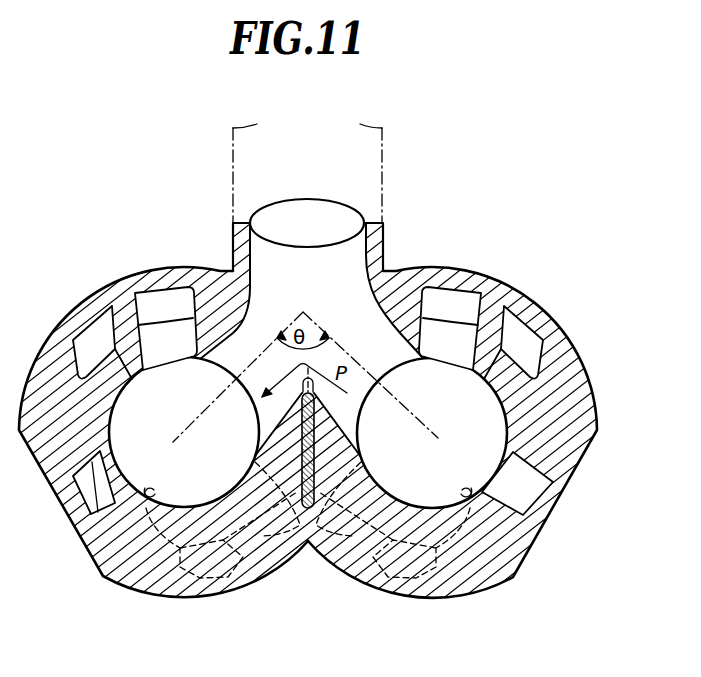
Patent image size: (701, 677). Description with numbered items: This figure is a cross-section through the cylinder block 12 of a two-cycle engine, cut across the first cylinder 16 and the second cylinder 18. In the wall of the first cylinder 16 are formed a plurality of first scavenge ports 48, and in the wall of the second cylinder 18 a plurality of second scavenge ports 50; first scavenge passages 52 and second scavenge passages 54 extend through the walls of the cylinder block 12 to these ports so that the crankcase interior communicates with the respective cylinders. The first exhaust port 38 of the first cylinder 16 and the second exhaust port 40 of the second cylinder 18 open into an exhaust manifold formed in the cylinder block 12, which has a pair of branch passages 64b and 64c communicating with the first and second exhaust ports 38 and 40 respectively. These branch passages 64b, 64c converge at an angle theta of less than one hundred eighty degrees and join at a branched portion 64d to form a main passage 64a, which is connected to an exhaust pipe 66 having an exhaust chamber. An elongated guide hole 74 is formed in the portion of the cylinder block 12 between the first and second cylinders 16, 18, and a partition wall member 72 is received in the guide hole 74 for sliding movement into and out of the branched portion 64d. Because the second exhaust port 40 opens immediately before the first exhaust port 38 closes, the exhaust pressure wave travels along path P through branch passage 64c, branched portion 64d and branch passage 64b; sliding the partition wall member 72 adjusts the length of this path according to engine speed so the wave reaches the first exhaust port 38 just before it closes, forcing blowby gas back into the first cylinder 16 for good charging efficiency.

The cylinder block 12 is at (568, 360).
The first cylinder 16 is at (150, 495).
The second cylinder 18 is at (463, 498).
The first exhaust port 38 is at (226, 367).
The second exhaust port 40 is at (385, 372).
The first scavenge ports 48 is at (144, 370).
The second scavenge ports 50 is at (465, 368).
The first scavenge passages 52 is at (140, 292).
The second scavenge passages 54 is at (507, 313).
The main passage 64a is at (355, 237).
The branch passage 64b is at (233, 333).
The branch passage 64c is at (385, 268).
The branched portion 64d is at (317, 350).
The exhaust pipe 66 is at (240, 177).
The partition wall member 72 is at (307, 510).
The guide hole 74 is at (313, 413).